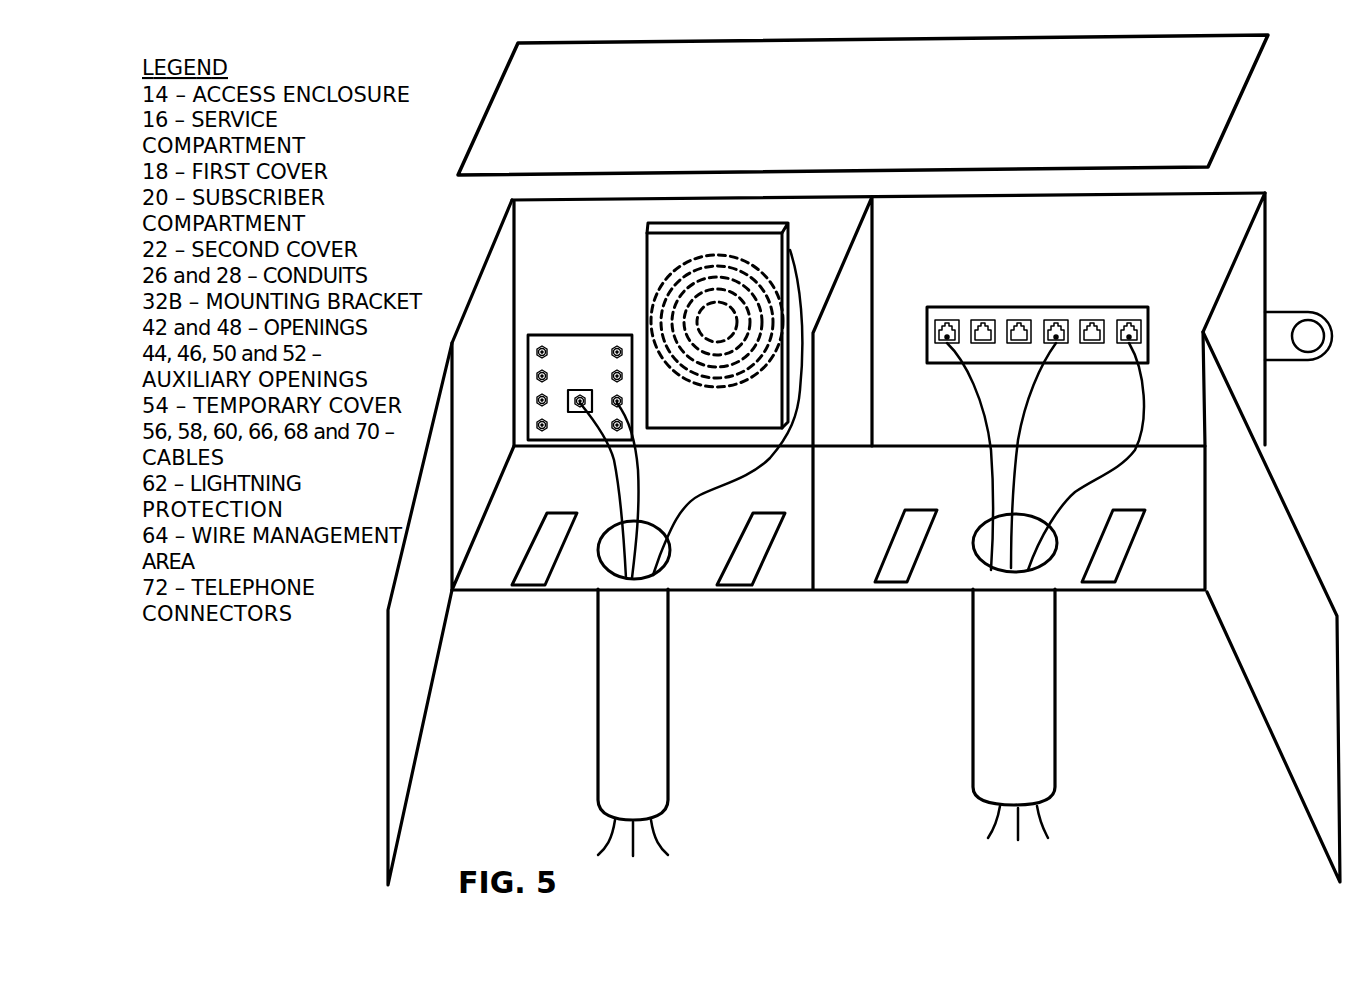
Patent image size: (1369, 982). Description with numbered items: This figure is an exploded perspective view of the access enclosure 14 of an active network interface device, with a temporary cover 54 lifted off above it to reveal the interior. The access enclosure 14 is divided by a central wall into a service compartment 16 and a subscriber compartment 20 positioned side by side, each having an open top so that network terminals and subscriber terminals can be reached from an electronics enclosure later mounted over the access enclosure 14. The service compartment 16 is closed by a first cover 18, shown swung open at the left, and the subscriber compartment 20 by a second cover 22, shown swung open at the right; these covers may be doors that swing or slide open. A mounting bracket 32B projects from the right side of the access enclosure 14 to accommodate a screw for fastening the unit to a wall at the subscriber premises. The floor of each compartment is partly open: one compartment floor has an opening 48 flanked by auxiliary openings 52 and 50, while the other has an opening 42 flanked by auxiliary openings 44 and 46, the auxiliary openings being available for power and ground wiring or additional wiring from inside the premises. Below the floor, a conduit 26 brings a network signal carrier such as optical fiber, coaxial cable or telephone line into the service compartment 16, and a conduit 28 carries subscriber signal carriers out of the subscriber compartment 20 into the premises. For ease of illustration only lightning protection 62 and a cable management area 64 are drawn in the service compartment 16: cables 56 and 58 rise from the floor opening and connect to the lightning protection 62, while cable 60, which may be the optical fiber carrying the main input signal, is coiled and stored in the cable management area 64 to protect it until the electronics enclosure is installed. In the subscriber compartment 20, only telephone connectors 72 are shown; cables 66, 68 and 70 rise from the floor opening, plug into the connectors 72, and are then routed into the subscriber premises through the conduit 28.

The access enclosure 14 is at (436, 77).
The service compartment 16 is at (483, 312).
The first cover 18 is at (412, 640).
The subscriber compartment 20 is at (1228, 205).
The second cover 22 is at (1275, 722).
The conduit 26 is at (620, 750).
The conduit 28 is at (990, 737).
The mounting bracket 32B is at (1281, 311).
The bottom opening 42 is at (962, 576).
The auxiliary opening 44 is at (882, 572).
The auxiliary opening 46 is at (1105, 575).
The opening 48 is at (600, 574).
The auxiliary opening 50 is at (745, 575).
The auxiliary opening 52 is at (522, 590).
The temporary cover 54 is at (498, 167).
The cable 56 is at (613, 492).
The cable 58 is at (657, 490).
The cable 60 is at (693, 512).
The lightning protection 62 is at (592, 345).
The cable management area 64 is at (650, 280).
The cable 66 is at (990, 500).
The cable 68 is at (1018, 490).
The cable 70 is at (1108, 478).
The telephone connectors 72 is at (965, 318).